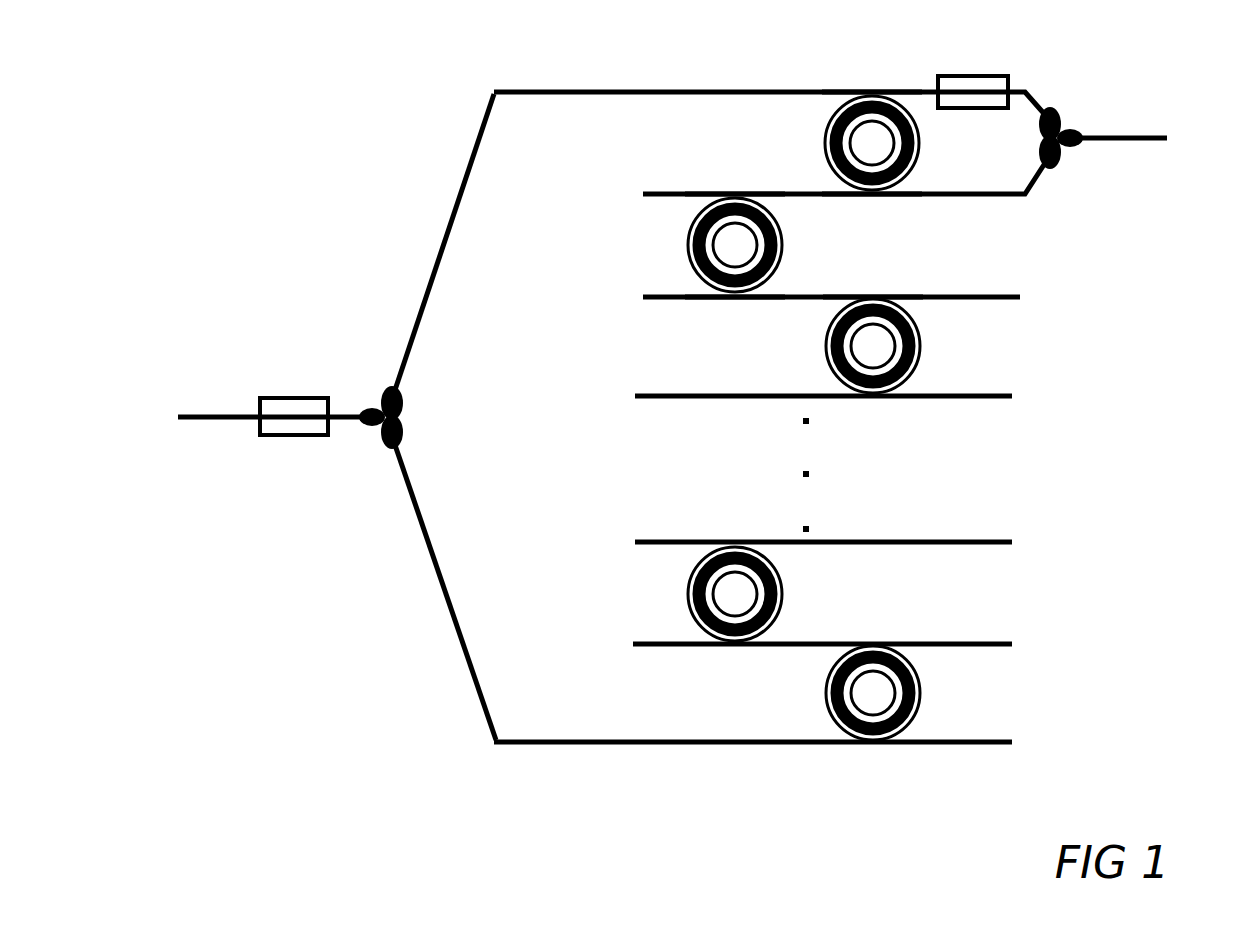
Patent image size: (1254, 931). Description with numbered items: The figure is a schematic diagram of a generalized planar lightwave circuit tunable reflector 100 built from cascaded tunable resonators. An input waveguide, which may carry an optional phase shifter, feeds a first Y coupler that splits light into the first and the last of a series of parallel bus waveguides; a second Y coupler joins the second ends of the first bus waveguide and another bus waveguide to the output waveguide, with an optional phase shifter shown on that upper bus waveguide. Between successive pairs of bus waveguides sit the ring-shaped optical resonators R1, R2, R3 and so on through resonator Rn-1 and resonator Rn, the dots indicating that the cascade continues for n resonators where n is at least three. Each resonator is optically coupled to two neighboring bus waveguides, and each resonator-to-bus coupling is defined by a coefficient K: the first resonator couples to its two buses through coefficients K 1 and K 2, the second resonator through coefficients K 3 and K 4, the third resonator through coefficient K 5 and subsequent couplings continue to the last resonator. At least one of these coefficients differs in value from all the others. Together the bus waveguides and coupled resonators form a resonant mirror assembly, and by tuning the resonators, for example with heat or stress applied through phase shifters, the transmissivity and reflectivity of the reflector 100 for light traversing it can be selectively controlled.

The tunable reflector 100 is at (356, 41).
The optical resonator R1 is at (872, 143).
The optical resonator R2 is at (735, 245).
The optical resonator R3 is at (873, 346).
The optical resonator Rn-1 is at (735, 594).
The optical resonator Rn is at (873, 693).
The coupling coefficient K 1 is at (872, 77).
The coupling coefficient K 2 is at (872, 208).
The coupling coefficient K 3 is at (735, 181).
The coupling coefficient K 4 is at (735, 310).
The coupling coefficient K 5 is at (873, 285).